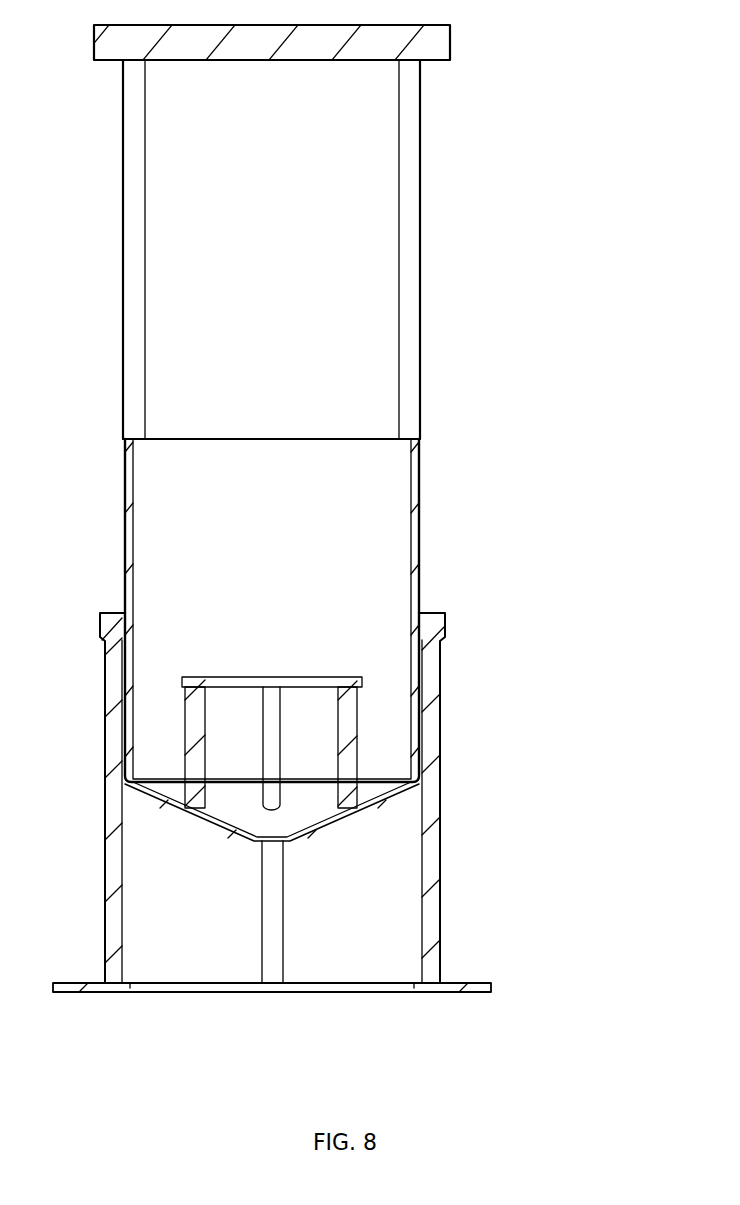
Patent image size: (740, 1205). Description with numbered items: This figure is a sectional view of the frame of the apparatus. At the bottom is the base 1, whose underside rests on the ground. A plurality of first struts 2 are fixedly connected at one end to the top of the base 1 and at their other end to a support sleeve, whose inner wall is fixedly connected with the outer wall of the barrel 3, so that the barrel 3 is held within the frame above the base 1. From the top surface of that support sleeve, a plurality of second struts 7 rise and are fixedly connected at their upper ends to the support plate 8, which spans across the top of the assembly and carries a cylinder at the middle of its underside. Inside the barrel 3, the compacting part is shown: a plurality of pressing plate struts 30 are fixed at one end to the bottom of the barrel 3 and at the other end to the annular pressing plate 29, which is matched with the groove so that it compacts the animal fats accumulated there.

The base 1 is at (400, 988).
The first struts 2 is at (428, 867).
The barrel 3 is at (337, 592).
The second struts 7 is at (413, 277).
The support plate 8 is at (367, 45).
The annular pressing plate 29 is at (277, 683).
The pressing plate struts 30 is at (270, 747).